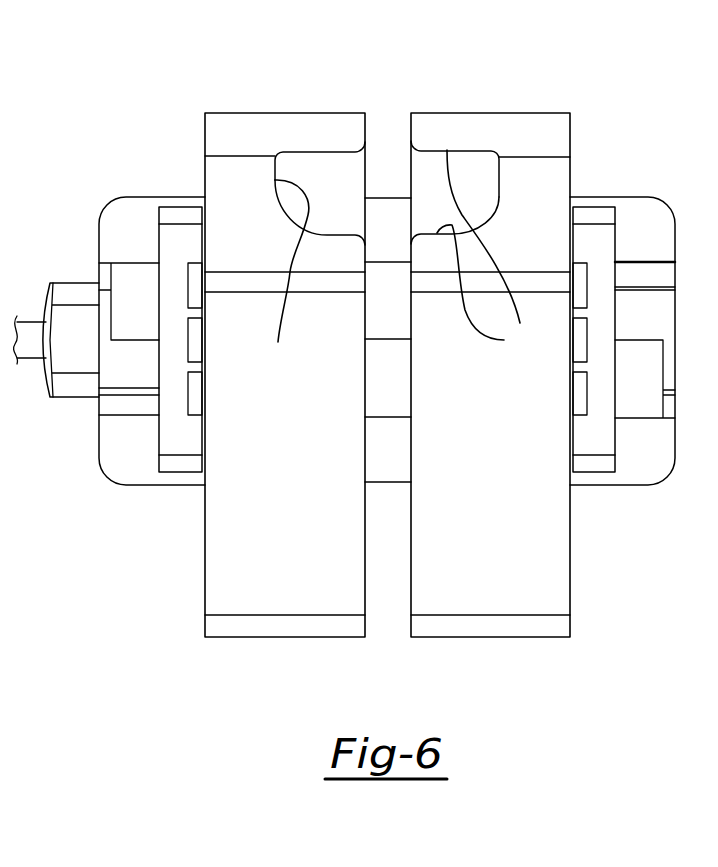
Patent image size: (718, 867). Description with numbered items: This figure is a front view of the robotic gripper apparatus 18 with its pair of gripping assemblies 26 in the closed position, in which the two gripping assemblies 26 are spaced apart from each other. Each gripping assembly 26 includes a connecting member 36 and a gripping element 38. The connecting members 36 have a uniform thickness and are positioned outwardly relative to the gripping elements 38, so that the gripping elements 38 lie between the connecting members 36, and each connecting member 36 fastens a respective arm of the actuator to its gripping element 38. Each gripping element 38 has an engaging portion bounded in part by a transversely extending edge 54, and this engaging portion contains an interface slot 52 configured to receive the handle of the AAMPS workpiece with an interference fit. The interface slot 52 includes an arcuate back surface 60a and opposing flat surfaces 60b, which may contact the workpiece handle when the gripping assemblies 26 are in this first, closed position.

The robotic gripper apparatus 18 is at (611, 97).
The gripping assembly 26 is at (183, 181).
The connecting member 36 is at (143, 464).
The gripping element 38 is at (236, 655).
The interface slot 52 is at (312, 150).
The transversely extending edge 54 is at (232, 172).
The arcuate back surface 60a is at (287, 280).
The flat surfaces 60b is at (488, 256).